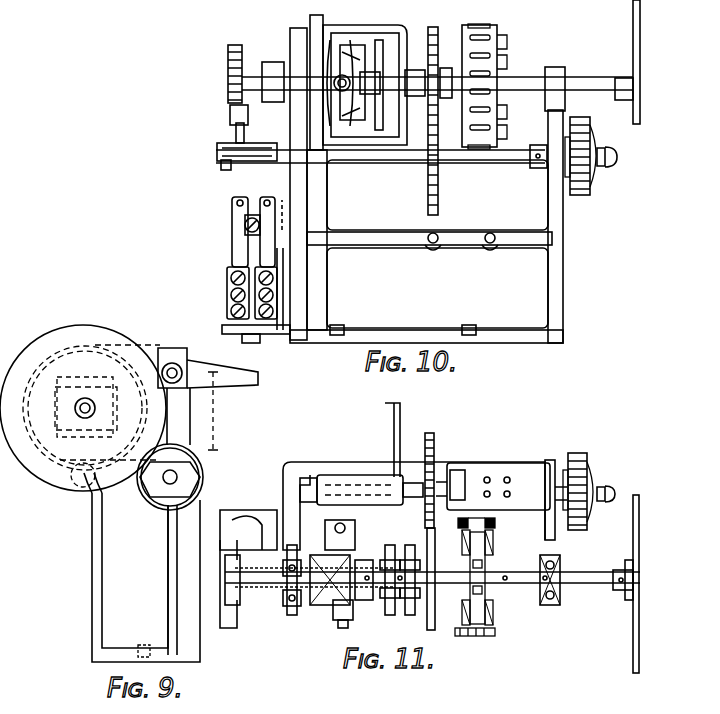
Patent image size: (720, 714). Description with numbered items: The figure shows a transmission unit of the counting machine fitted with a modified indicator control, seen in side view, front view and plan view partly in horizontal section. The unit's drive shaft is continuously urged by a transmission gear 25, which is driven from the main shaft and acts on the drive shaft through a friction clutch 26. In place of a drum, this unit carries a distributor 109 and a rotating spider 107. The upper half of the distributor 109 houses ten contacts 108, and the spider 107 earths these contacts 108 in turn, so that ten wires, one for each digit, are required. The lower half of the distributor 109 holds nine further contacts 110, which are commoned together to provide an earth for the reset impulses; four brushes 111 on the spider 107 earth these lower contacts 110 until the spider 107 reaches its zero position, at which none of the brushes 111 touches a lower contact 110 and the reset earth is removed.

In FIG. 10, the transmission gear 25 is at (580, 196).
In FIG. 11, the transmission gear 25 is at (583, 452).
In FIG. 10, the friction clutch 26 is at (598, 175).
In FIG. 11, the spider 107 is at (469, 620).
In FIG. 10, the contact 108 is at (508, 47).
In FIG. 11, the contact 108 is at (496, 528).
In FIG. 10, the distributor 109 is at (492, 32).
In FIG. 11, the distributor 109 is at (495, 634).
In FIG. 10, the contact 110 is at (506, 128).
In FIG. 11, the brush 111 is at (494, 628).